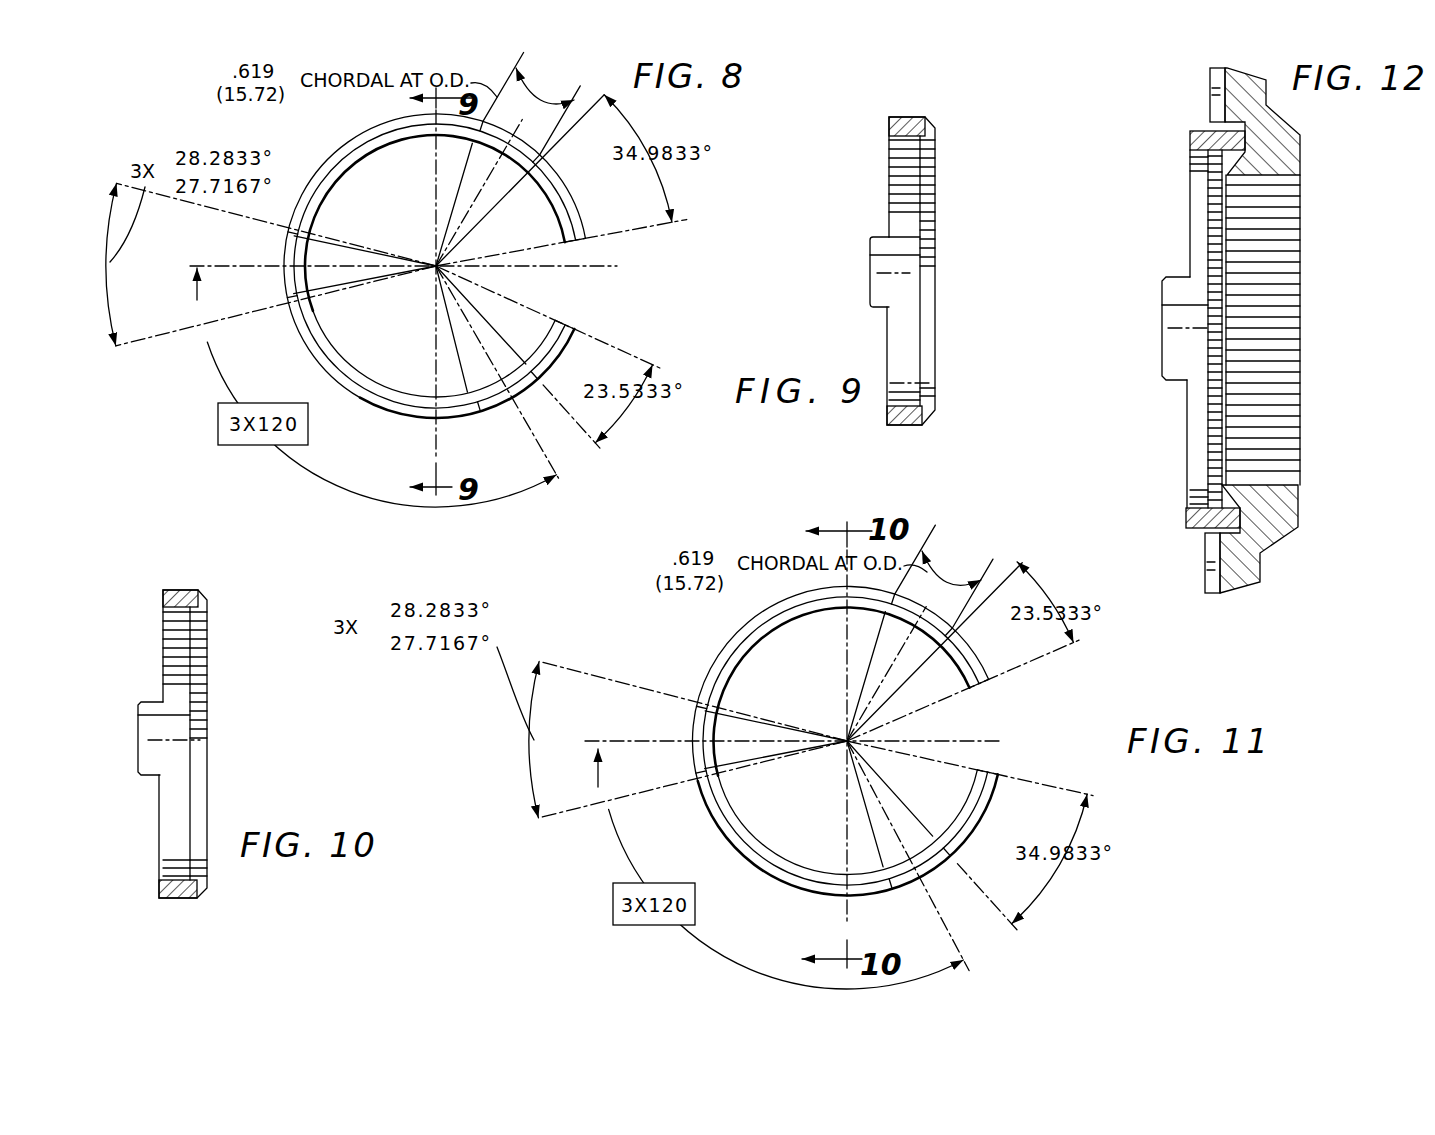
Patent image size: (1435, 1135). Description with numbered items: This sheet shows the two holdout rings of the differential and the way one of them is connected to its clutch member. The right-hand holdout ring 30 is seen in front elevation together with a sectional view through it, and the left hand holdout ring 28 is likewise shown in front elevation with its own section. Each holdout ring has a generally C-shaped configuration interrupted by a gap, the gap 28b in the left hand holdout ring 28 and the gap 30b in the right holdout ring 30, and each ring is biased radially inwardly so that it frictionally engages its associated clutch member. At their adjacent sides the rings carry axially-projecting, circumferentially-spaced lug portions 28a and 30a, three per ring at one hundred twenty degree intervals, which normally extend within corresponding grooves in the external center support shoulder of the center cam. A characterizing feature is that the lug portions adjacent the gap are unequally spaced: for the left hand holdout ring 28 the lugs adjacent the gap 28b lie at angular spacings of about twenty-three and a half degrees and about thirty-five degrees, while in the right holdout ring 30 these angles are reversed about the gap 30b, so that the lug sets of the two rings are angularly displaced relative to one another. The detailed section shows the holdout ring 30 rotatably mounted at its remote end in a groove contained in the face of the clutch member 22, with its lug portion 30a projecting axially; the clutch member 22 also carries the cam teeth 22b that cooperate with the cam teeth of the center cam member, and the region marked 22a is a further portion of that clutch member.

In FIG. 12, the clutch member 22 is at (1238, 330).
In FIG. 12, the upper flange of housing 22a is at (1218, 112).
In FIG. 12, the cam teeth 22b is at (1217, 494).
In FIG. 10, the left hand holdout ring 28 is at (207, 758).
In FIG. 11, the left hand holdout ring 28 is at (867, 740).
In FIG. 10, the lug portions 28a is at (145, 750).
In FIG. 11, the lug portions 28a is at (787, 763).
In FIG. 11, the gap 28b is at (1018, 726).
In FIG. 8, the right holdout ring 30 is at (451, 266).
In FIG. 9, the right holdout ring 30 is at (928, 294).
In FIG. 12, the right holdout ring 30 is at (1198, 538).
In FIG. 8, the lug portions 30a is at (388, 288).
In FIG. 9, the lug portions 30a is at (880, 287).
In FIG. 12, the lug portions 30a is at (1175, 317).
In FIG. 8, the gap 30b is at (609, 283).